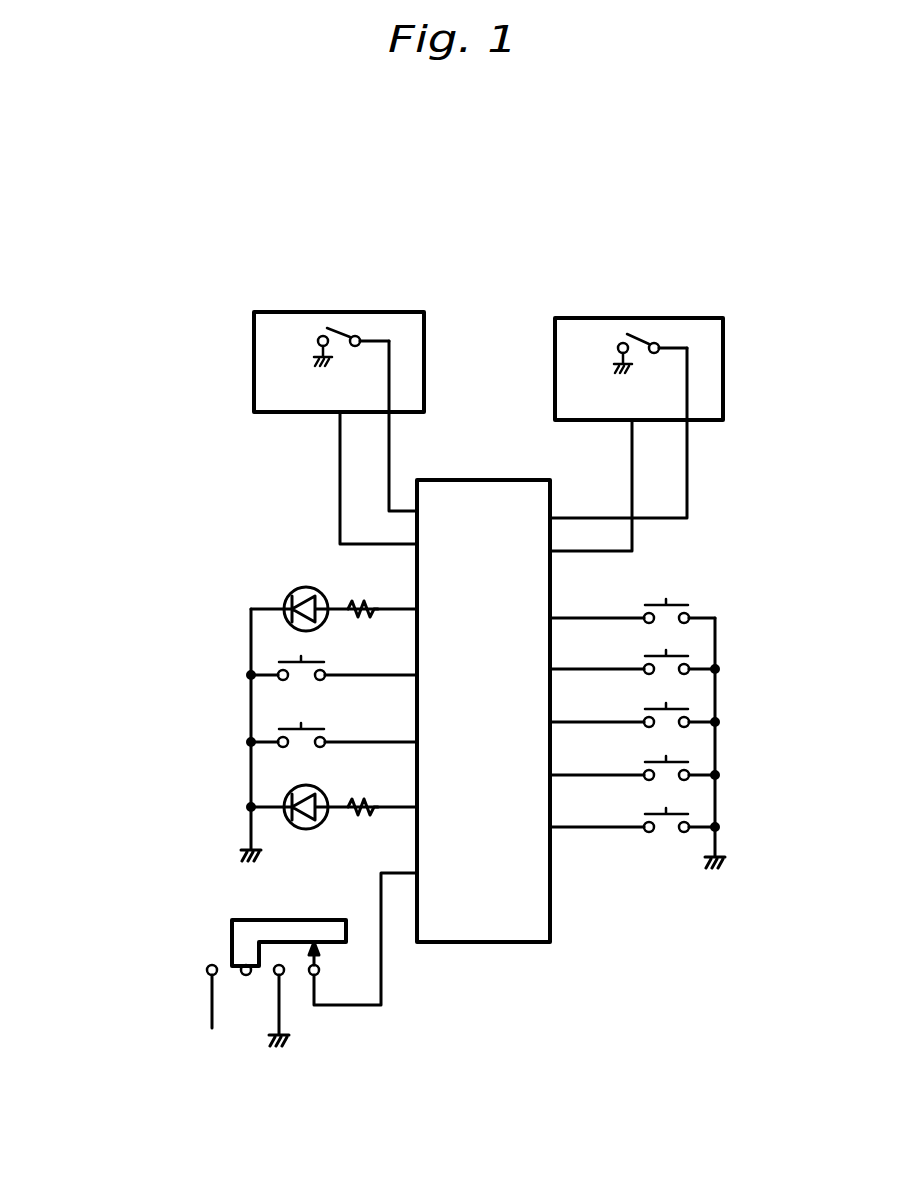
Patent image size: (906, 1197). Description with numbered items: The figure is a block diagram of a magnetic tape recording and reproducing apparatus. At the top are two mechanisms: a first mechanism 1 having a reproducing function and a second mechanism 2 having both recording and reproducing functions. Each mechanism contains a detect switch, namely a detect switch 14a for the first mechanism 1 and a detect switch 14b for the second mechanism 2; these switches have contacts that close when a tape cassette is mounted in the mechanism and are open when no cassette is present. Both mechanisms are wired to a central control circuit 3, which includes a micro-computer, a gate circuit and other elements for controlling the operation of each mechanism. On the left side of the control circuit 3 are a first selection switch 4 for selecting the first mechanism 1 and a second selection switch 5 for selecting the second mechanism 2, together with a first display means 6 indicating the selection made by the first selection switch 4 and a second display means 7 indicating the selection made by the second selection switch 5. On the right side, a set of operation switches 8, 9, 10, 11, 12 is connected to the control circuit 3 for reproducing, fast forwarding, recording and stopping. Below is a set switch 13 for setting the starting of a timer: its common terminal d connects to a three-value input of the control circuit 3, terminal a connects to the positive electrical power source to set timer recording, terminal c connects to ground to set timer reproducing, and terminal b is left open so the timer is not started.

The first mechanism 1 is at (410, 345).
The second mechanism 2 is at (589, 347).
The control circuit 3 is at (518, 929).
The first selection switch 4 is at (268, 661).
The second selection switch 5 is at (268, 730).
The first display means 6 is at (284, 592).
The second display means 7 is at (270, 790).
The operation switch 8 is at (700, 609).
The operation switch 9 is at (699, 662).
The operation switch 10 is at (697, 714).
The operation switch 11 is at (697, 766).
The operation switch 12 is at (697, 818).
The set switch 13 is at (232, 940).
The detect switch 14a is at (340, 325).
The detect switch 14b is at (642, 328).